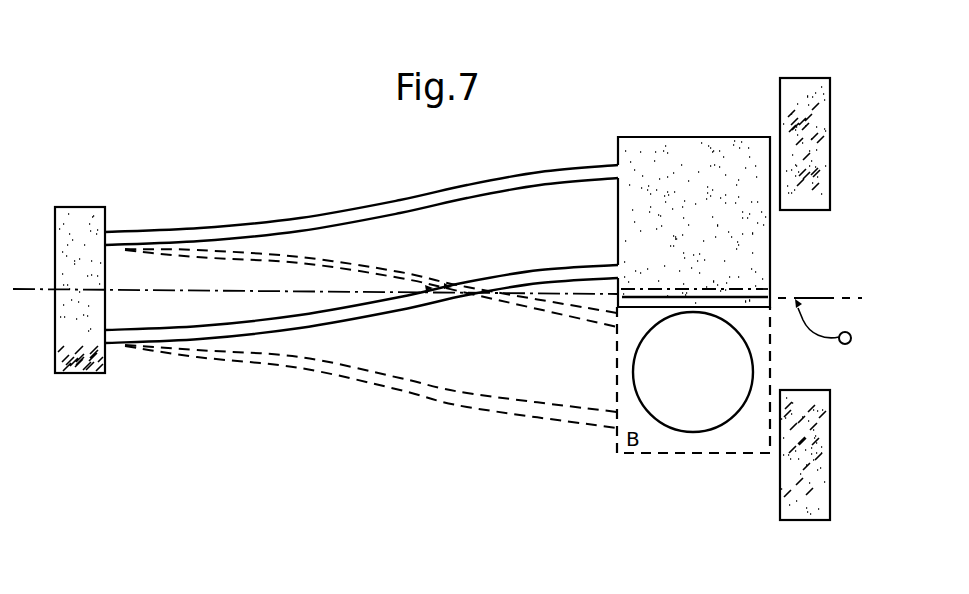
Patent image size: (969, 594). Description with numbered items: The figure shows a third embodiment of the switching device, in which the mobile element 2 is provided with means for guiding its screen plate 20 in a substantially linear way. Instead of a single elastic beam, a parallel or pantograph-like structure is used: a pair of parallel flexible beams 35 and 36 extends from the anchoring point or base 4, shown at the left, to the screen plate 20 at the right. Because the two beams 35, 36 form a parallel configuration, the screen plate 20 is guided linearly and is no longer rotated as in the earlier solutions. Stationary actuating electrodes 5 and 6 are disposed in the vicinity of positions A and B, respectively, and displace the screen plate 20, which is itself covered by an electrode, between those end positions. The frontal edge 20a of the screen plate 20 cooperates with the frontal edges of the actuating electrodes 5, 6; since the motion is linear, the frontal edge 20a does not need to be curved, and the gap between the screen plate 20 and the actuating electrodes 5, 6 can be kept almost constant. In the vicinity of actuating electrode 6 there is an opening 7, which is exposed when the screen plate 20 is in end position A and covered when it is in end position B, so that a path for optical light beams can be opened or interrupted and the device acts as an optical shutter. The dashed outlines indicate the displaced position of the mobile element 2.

The mobile element 2 is at (729, 158).
The anchoring point or base 4 is at (80, 212).
The actuating electrode 5 is at (806, 92).
The actuating electrode 6 is at (800, 500).
The opening 7 is at (687, 422).
The screen plate 20 is at (663, 152).
The frontal edge 20a is at (772, 226).
The flexible beam 35 is at (287, 224).
The flexible beam 36 is at (390, 305).